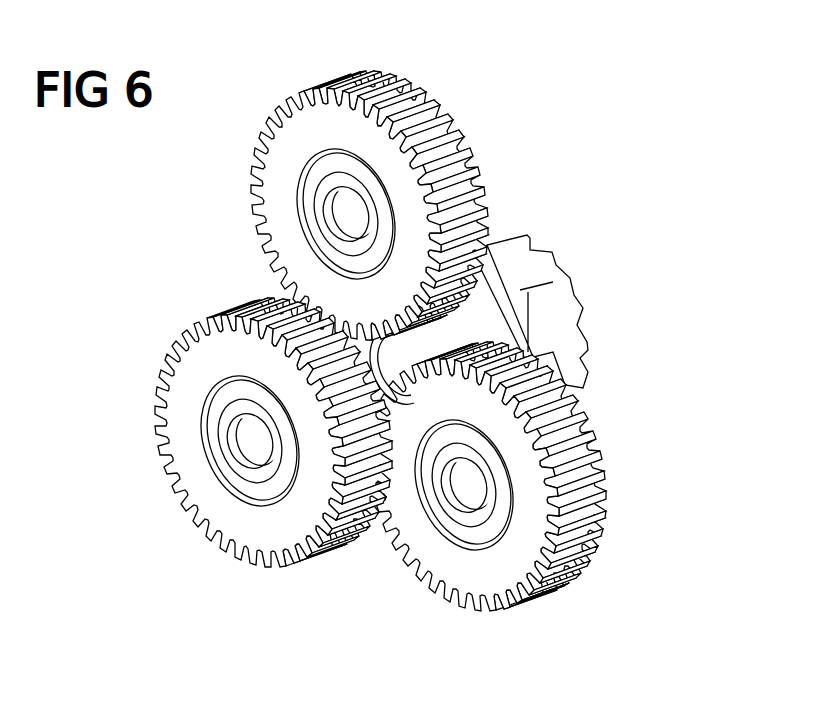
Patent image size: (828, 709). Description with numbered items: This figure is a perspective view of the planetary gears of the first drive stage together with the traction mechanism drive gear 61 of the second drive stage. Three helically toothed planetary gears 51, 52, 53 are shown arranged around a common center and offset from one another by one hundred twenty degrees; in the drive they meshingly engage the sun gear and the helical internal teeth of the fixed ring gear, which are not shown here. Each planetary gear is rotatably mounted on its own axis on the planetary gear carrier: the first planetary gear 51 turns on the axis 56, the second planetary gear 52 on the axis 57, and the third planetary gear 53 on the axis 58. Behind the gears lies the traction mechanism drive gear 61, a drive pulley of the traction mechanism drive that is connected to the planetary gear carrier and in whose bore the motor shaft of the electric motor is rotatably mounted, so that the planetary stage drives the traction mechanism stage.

The planetary gear 51 is at (329, 183).
The planetary gear 52 is at (535, 501).
The planetary gear 53 is at (245, 432).
The axis 56 is at (340, 218).
The axis 57 is at (465, 492).
The axis 58 is at (247, 443).
The traction mechanism drive gear 61 is at (528, 272).